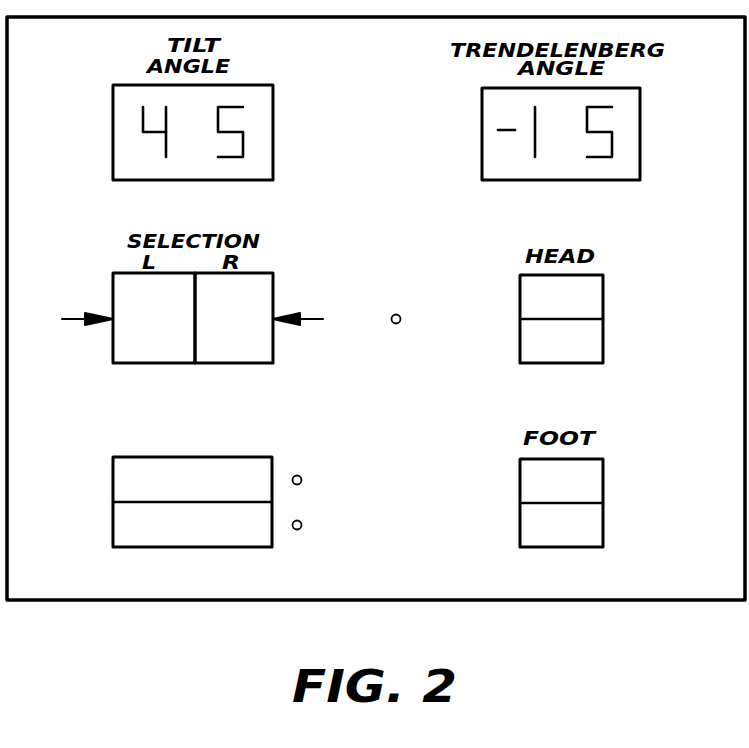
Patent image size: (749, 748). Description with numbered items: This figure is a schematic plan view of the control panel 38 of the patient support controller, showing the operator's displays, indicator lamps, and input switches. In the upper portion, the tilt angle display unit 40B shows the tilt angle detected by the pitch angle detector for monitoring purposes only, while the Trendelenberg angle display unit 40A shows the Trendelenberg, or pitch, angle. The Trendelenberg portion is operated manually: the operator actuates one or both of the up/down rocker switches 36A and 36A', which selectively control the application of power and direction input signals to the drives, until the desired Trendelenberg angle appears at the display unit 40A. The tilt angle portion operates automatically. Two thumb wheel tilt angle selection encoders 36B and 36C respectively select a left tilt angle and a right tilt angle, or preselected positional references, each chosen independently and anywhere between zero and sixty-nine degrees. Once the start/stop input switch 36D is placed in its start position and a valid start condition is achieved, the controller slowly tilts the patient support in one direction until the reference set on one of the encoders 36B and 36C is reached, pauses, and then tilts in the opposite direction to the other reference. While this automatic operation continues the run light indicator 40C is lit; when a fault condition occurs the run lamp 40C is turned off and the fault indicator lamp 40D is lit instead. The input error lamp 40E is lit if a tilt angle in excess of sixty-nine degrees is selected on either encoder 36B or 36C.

The control panel 38 is at (402, 120).
The Trendelenberg angle display unit 40A is at (531, 182).
The tilt angle display unit 40B is at (230, 182).
The run light indicator 40C is at (300, 476).
The fault indicator lamp 40D is at (299, 529).
The input error lamp 40E is at (400, 315).
The up/down rocker switch 36A is at (604, 337).
The up/down rocker switch 36A' is at (597, 520).
The thumb wheel tilt angle selection encoder 36B is at (163, 363).
The thumb wheel tilt angle selection encoder 36C is at (230, 363).
The start/stop input switch 36D is at (160, 457).